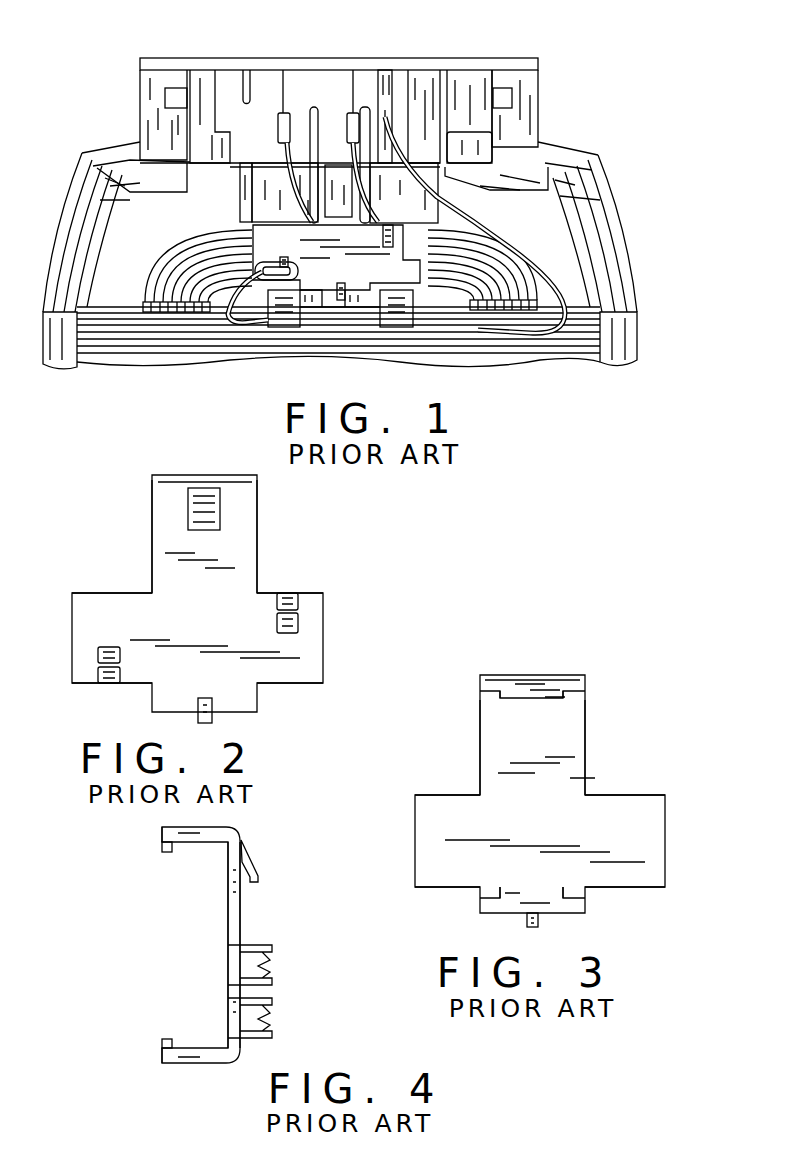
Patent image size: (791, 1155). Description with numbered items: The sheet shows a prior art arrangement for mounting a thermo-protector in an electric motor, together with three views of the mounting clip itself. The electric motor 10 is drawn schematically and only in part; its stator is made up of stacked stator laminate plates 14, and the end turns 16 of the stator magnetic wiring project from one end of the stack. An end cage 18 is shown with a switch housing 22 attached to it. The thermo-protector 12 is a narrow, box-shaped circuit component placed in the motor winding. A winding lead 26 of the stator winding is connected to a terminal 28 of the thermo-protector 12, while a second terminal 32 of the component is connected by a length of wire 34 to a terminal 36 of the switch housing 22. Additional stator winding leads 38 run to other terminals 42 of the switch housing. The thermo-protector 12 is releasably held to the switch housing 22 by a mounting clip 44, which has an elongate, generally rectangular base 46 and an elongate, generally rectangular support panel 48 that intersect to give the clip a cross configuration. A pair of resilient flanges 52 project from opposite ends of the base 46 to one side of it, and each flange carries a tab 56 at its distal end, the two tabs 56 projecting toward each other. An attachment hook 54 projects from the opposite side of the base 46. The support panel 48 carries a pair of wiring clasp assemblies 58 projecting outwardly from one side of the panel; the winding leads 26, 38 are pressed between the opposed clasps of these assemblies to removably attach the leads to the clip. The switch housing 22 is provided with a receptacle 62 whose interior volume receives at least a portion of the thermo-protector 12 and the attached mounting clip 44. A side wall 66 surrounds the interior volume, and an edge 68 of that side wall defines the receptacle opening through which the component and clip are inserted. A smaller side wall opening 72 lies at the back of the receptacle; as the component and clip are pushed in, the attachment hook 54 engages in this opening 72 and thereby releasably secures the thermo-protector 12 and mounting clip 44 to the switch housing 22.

In FIG. 1, the electric motor 10 is at (573, 98).
In FIG. 1, the thermo-protector 12 is at (495, 305).
In FIG. 1, the stator laminate plates 14 is at (603, 332).
In FIG. 1, the end turns of the stator magnetic wiring 16 is at (455, 250).
In FIG. 1, the end cage 18 is at (603, 173).
In FIG. 1, the switch housing 22 is at (532, 73).
In FIG. 1, the winding lead 26 is at (232, 312).
In FIG. 1, the terminal 28 is at (283, 312).
In FIG. 1, the second terminal 32 is at (397, 318).
In FIG. 1, the length of wire 34 is at (557, 328).
In FIG. 1, the terminal of the switch housing 36 is at (394, 97).
In FIG. 1, the additional stator winding leads 38 is at (272, 120).
In FIG. 1, the other terminals of the switch housing 42 is at (290, 118).
In FIG. 1, the mounting clip 44 is at (250, 227).
In FIG. 2, the mounting clip 44 is at (240, 570).
In FIG. 3, the mounting clip 44 is at (570, 777).
In FIG. 4, the mounting clip 44 is at (232, 920).
In FIG. 1, the base 46 is at (323, 292).
In FIG. 2, the base 46 is at (165, 528).
In FIG. 3, the base 46 is at (497, 738).
In FIG. 4, the base 46 is at (240, 900).
In FIG. 1, the support panel 48 is at (136, 305).
In FIG. 2, the support panel 48 is at (125, 612).
In FIG. 3, the support panel 48 is at (430, 860).
In FIG. 4, the support panel 48 is at (233, 988).
In FIG. 1, the resilient flanges 52 is at (347, 296).
In FIG. 2, the resilient flanges 52 is at (205, 710).
In FIG. 3, the resilient flanges 52 is at (492, 680).
In FIG. 4, the resilient flanges 52 is at (162, 834).
In FIG. 1, the attachment hook 54 is at (330, 180).
In FIG. 2, the attachment hook 54 is at (220, 508).
In FIG. 4, the attachment hook 54 is at (252, 862).
In FIG. 3, the tabs 56 is at (543, 700).
In FIG. 4, the tabs 56 is at (158, 853).
In FIG. 1, the wiring clasp assemblies 58 is at (262, 302).
In FIG. 2, the wiring clasp assemblies 58 is at (309, 605).
In FIG. 4, the wiring clasp assemblies 58 is at (278, 967).
In FIG. 1, the receptacle 62 is at (270, 210).
In FIG. 1, the side wall 66 is at (262, 180).
In FIG. 1, the edge of the receptacle side wall 68 is at (430, 228).
In FIG. 1, the side wall opening 72 is at (222, 128).